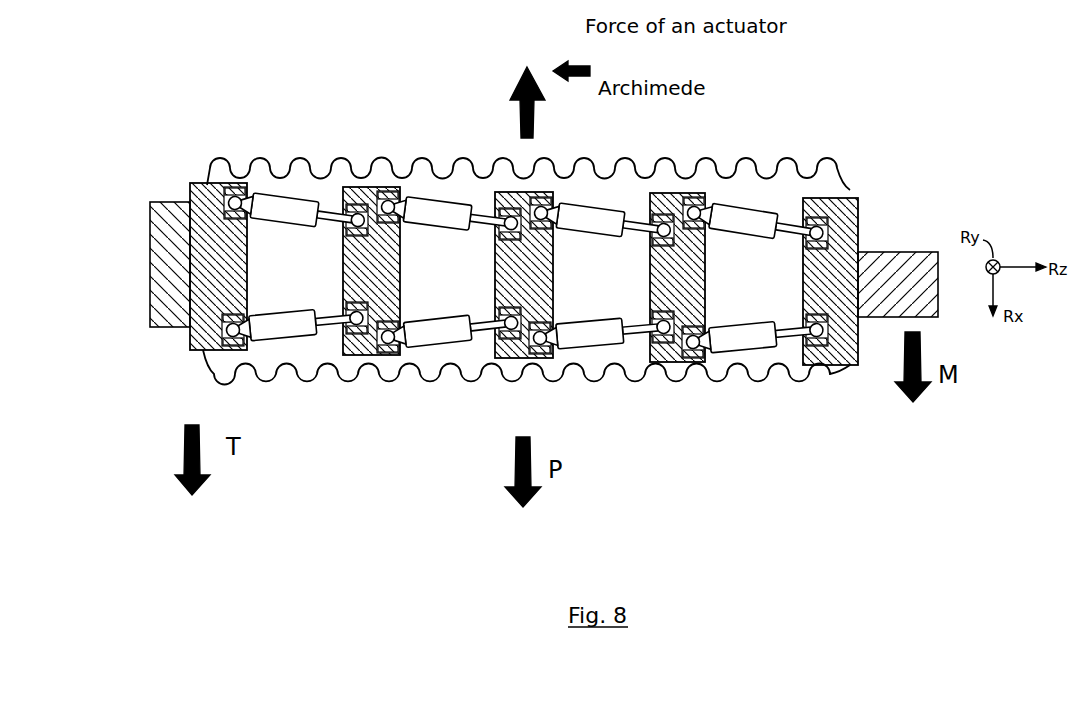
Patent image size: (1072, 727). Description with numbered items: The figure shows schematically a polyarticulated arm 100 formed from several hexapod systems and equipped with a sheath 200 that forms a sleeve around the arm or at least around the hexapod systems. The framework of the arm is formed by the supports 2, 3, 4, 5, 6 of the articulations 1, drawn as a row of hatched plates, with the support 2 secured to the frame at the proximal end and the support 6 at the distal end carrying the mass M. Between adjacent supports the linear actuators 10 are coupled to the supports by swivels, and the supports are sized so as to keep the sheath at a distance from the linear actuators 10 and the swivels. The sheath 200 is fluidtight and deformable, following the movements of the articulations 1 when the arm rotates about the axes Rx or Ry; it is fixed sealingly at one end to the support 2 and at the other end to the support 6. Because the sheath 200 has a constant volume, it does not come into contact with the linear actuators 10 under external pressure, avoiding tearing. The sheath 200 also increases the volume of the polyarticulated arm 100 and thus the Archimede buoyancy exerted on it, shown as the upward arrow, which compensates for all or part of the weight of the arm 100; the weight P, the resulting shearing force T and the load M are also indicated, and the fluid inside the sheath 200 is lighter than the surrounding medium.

The articulation 1 is at (296, 349).
The support 2 is at (222, 183).
The support 3 is at (378, 187).
The support 4 is at (502, 192).
The support 5 is at (682, 193).
The support 6 is at (856, 198).
The linear actuator 10 is at (285, 205).
The polyarticulated arm 100 is at (377, 90).
The sheath 200 is at (667, 393).